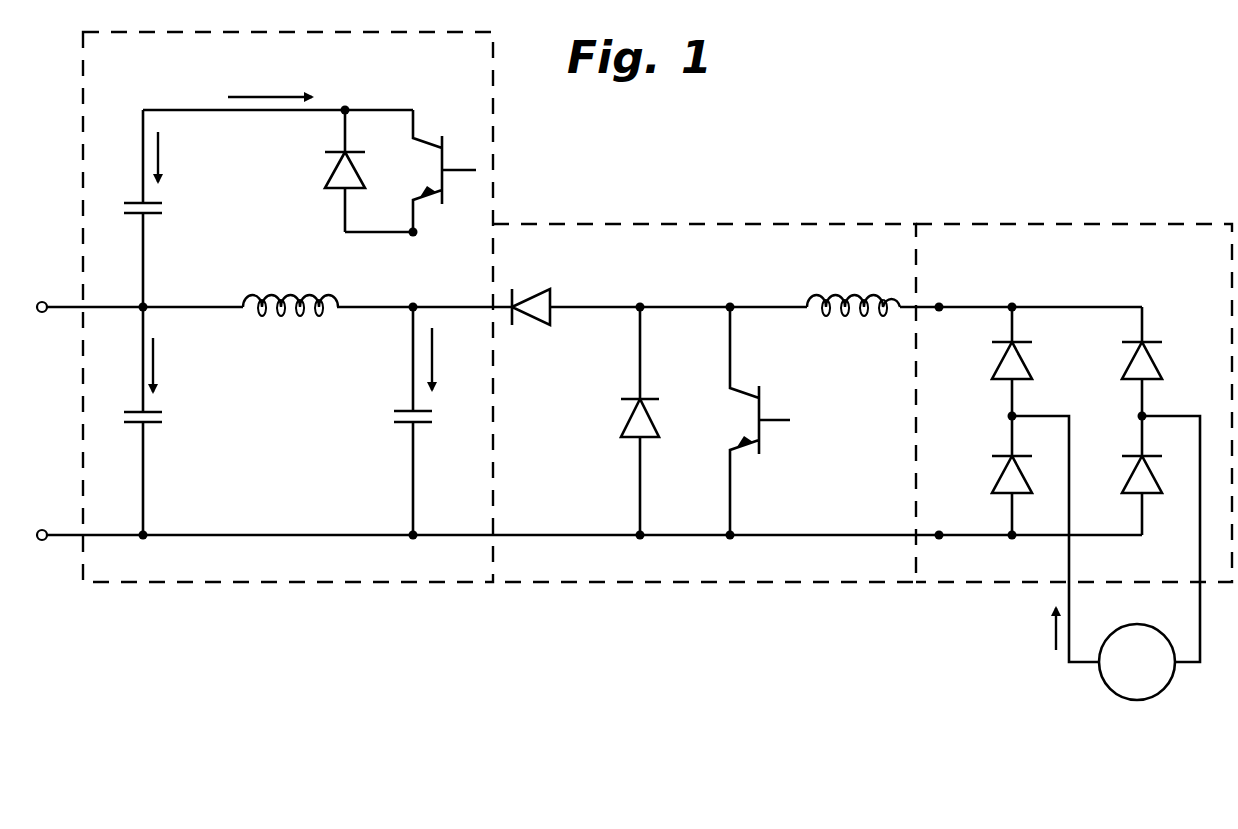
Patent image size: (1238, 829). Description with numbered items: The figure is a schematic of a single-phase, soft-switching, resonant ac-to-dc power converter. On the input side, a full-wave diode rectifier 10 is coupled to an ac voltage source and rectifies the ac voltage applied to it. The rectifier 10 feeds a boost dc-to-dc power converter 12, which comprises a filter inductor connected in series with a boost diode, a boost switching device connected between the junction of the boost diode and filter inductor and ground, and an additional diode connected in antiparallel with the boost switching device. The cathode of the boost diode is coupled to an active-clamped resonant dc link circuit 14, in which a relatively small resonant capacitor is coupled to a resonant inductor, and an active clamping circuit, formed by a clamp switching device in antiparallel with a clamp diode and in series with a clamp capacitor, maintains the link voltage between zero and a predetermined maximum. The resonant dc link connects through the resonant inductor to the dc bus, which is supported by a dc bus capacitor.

The full-wave diode rectifier 10 is at (1035, 224).
The boost dc-to-dc power converter 12 is at (730, 223).
The active-clamped resonant dc link circuit 14 is at (493, 189).